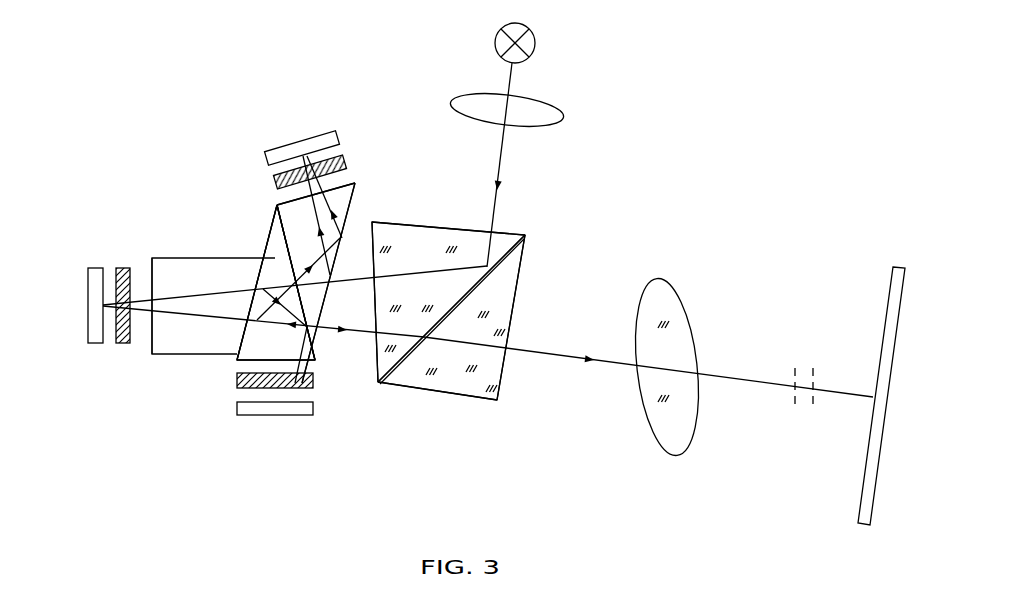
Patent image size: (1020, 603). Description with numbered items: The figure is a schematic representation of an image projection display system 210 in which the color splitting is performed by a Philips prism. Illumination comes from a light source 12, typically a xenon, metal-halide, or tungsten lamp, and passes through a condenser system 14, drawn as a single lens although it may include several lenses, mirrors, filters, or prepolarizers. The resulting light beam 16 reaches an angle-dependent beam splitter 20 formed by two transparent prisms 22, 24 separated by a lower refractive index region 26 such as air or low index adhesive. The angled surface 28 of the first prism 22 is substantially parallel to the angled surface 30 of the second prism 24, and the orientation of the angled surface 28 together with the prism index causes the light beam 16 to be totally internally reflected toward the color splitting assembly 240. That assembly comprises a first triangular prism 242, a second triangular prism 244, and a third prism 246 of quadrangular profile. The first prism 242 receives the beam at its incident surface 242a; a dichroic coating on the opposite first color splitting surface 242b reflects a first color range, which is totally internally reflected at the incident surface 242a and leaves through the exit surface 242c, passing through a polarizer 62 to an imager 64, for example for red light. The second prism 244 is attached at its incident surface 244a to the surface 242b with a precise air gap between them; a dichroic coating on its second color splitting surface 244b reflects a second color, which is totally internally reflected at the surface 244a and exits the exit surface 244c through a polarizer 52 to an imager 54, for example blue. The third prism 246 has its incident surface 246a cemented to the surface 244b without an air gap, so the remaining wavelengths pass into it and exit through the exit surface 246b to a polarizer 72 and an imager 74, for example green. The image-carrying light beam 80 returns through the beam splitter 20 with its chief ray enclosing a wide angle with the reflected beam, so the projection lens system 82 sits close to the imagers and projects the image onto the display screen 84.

The light source 12 is at (531, 46).
The condenser system 14 is at (547, 112).
The light beam 16 is at (503, 172).
The beam splitter 20 is at (546, 229).
The first prism 22 is at (480, 238).
The second prism 24 is at (506, 290).
The lower refractive index region 26 is at (376, 388).
The angled surface 28 is at (388, 307).
The angled surface 30 is at (440, 326).
The polarizer 52 is at (262, 388).
The imager 54 is at (292, 412).
The polarizer 62 is at (272, 182).
The imager 64 is at (322, 142).
The polarizer 72 is at (126, 266).
The imager 74 is at (98, 267).
The light beam 80 is at (540, 358).
The projection lens system 82 is at (663, 437).
The display screen 84 is at (867, 508).
The projection display system 210 is at (639, 71).
The color splitting assembly 240 is at (187, 167).
The first triangular prism 242 is at (348, 196).
The incident surface 242a is at (348, 190).
The first color splitting surface 242b is at (393, 247).
The exit surface 242c is at (348, 188).
The second triangular prism 244 is at (250, 352).
The incident surface 244a is at (313, 352).
The second color splitting surface 244b is at (267, 291).
The exit surface 244c is at (314, 407).
The third prism 246 is at (165, 354).
The incident surface 246a is at (265, 266).
The exit surface 246b is at (160, 280).